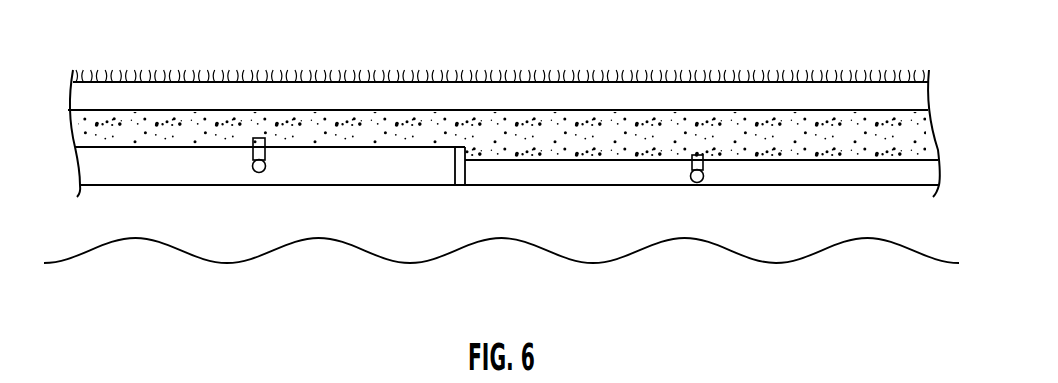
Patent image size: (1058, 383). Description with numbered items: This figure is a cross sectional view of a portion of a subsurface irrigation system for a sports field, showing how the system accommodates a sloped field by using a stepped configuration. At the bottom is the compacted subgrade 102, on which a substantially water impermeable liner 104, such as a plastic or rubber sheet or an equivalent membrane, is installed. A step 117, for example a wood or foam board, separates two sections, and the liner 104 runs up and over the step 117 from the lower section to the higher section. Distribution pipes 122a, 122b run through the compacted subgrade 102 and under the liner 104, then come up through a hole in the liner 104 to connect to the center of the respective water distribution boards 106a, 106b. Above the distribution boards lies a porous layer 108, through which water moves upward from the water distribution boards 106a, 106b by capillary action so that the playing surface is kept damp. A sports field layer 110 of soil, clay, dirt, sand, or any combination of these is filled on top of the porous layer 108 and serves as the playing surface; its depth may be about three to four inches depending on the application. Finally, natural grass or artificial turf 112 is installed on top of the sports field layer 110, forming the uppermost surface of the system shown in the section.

The compacted subgrade 102 is at (369, 170).
The substantially water impermeable liner 104 is at (222, 148).
The water distribution board 106a is at (700, 155).
The water distribution board 106b is at (259, 138).
The porous layer 108 is at (506, 132).
The sports field layer 110 is at (643, 98).
The natural grass or artificial turf 112 is at (832, 80).
The step 117 is at (465, 167).
The distribution pipe 122a is at (699, 183).
The distribution pipe 122b is at (260, 173).